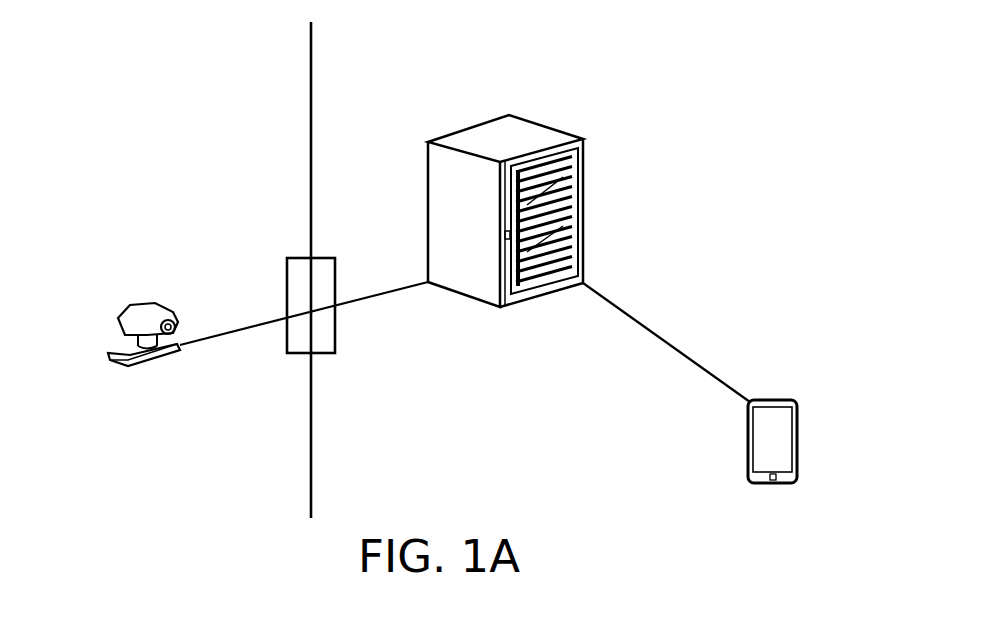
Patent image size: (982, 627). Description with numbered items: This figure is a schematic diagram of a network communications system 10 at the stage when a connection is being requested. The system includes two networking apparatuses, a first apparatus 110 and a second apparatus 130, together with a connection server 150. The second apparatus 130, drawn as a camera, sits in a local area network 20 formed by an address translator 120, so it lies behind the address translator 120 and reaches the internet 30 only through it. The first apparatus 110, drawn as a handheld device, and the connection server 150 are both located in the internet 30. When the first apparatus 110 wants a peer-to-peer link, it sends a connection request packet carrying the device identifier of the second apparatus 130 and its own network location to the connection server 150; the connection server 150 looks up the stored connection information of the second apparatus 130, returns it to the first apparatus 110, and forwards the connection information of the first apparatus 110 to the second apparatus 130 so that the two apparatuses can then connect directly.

The network communications system 10 is at (784, 55).
The local area network 20 is at (228, 68).
The internet 30 is at (493, 68).
The first apparatus 110 is at (797, 424).
The address translator 120 is at (335, 350).
The second apparatus 130 is at (119, 313).
The connection server 150 is at (584, 142).